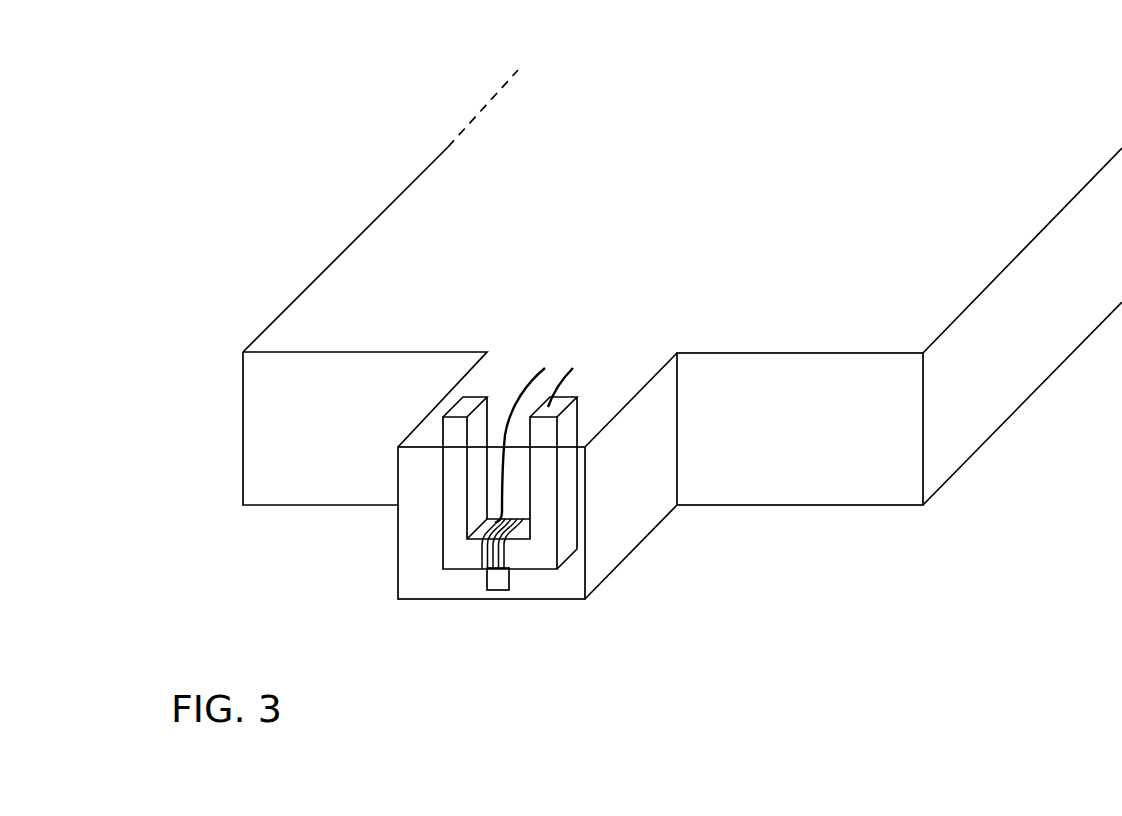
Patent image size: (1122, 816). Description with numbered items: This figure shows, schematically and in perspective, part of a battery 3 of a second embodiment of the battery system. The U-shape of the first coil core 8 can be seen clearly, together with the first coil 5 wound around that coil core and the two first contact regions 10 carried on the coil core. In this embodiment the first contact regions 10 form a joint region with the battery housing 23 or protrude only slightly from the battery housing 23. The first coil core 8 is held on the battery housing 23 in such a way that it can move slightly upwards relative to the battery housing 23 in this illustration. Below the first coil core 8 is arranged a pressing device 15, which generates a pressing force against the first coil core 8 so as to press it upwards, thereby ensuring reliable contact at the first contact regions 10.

The battery 3 is at (439, 116).
The first coil 5 is at (477, 568).
The first coil core 8 is at (543, 504).
The first contact regions 10 is at (552, 408).
The pressing device 15 is at (496, 589).
The battery housing 23 is at (958, 416).